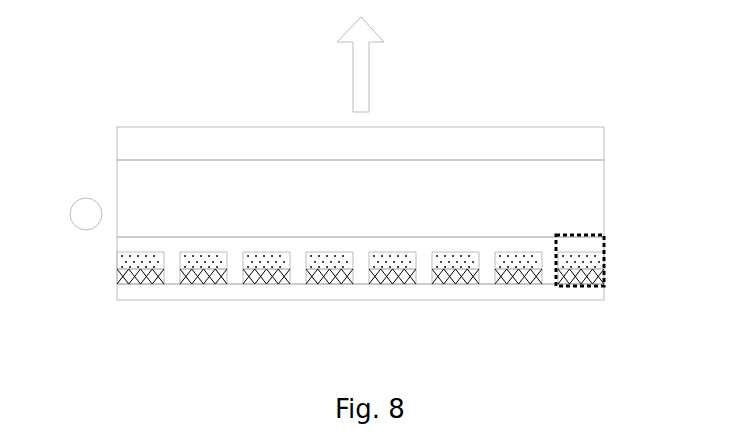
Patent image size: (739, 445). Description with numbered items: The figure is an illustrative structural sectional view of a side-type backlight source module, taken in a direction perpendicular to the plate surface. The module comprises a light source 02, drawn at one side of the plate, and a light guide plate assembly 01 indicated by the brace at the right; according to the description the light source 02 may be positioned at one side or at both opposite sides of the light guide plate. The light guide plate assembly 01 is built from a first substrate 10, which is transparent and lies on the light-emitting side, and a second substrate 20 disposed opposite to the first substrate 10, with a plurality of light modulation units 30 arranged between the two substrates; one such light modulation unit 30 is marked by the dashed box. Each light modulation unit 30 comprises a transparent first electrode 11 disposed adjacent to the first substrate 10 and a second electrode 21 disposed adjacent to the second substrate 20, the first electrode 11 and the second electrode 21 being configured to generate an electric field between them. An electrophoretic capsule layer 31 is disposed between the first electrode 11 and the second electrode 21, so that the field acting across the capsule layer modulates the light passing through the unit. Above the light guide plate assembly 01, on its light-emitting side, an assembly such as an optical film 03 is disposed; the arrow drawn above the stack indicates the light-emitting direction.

The light guide plate assembly 01 is at (658, 158).
The light source 02 is at (85, 215).
The optical film 03 is at (587, 144).
The first substrate 10 is at (587, 199).
The first electrode 11 is at (587, 243).
The electrophoretic capsule layer 31 is at (590, 258).
The second electrode 21 is at (590, 274).
The second substrate 20 is at (590, 290).
The light modulation unit 30 is at (557, 287).